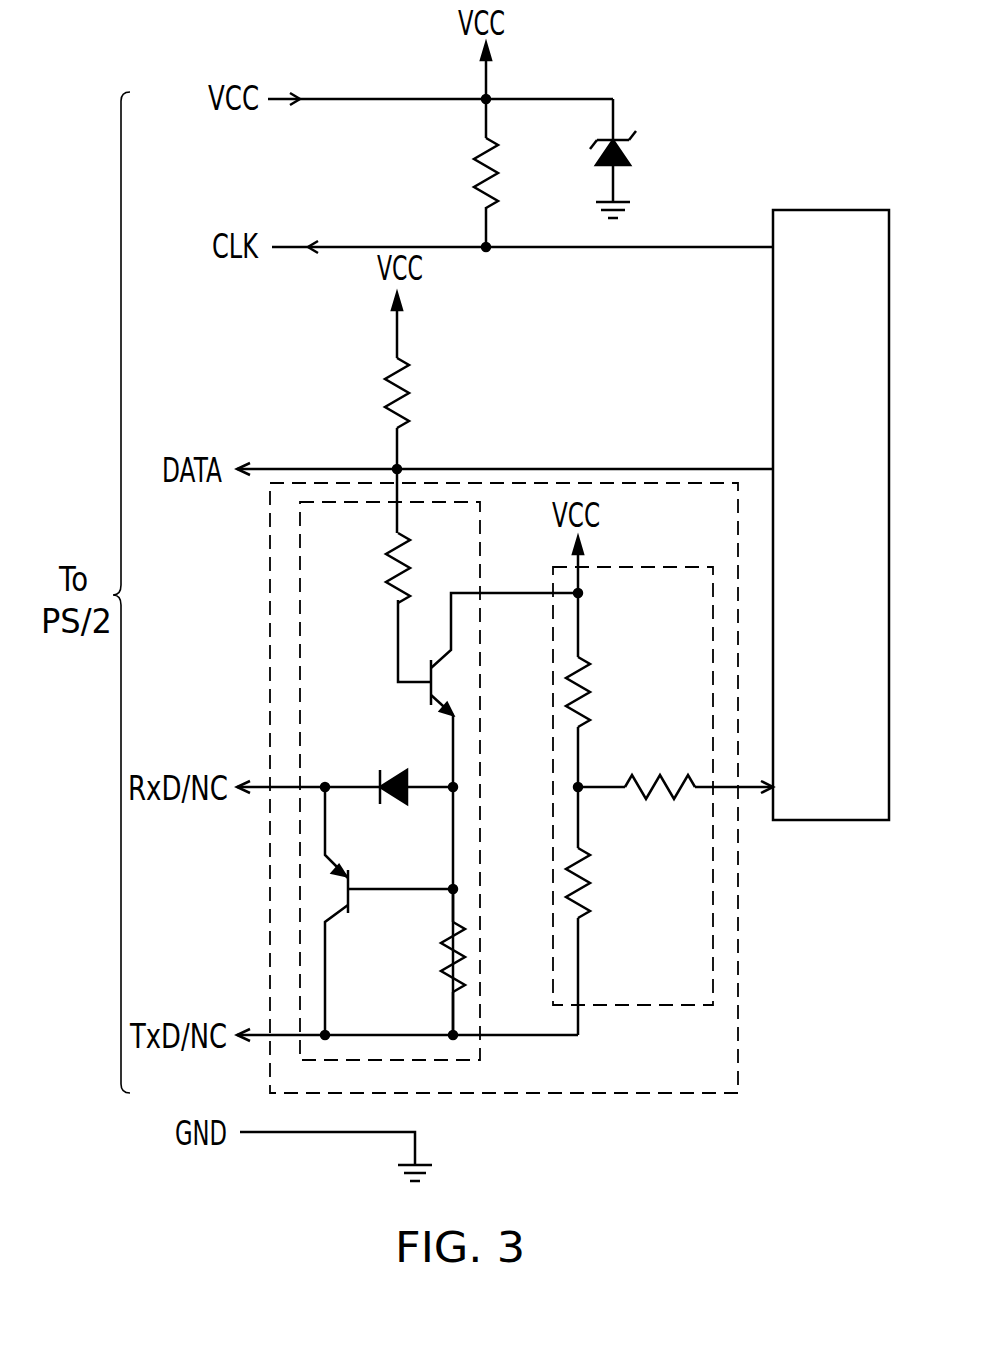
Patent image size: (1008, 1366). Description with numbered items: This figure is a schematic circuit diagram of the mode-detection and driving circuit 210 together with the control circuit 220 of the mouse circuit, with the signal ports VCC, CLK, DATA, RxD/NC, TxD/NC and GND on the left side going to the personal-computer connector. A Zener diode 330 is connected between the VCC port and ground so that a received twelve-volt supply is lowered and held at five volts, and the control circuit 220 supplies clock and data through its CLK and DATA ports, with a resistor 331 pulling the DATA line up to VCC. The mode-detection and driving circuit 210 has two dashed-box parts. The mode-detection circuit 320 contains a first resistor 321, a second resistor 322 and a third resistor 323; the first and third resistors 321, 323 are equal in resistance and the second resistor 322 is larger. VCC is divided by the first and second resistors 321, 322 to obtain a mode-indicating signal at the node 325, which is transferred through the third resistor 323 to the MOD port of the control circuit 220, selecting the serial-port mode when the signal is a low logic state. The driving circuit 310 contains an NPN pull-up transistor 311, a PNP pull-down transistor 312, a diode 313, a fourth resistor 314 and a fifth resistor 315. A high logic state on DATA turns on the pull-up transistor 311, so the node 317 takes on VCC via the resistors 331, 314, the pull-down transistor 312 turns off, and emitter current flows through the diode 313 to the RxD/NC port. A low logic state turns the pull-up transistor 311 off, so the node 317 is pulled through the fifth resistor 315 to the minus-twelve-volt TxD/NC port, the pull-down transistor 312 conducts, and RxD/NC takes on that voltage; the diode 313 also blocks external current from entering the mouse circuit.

The mode-detection and driving circuit 210 is at (738, 1030).
The control circuit 220 is at (830, 210).
The driving circuit 310 is at (430, 1060).
The pull-up transistor 311 is at (443, 660).
The pull-down transistor 312 is at (346, 908).
The diode 313 is at (380, 777).
The fourth resistor 314 is at (392, 586).
The fifth resistor 315 is at (460, 960).
The node 317 is at (457, 787).
The mode-detection circuit 320 is at (615, 1005).
The first resistor 321 is at (586, 655).
The second resistor 322 is at (585, 905).
The third resistor 323 is at (660, 780).
The node 325 is at (582, 790).
The Zener diode 330 is at (645, 158).
The resistor 331 is at (408, 385).